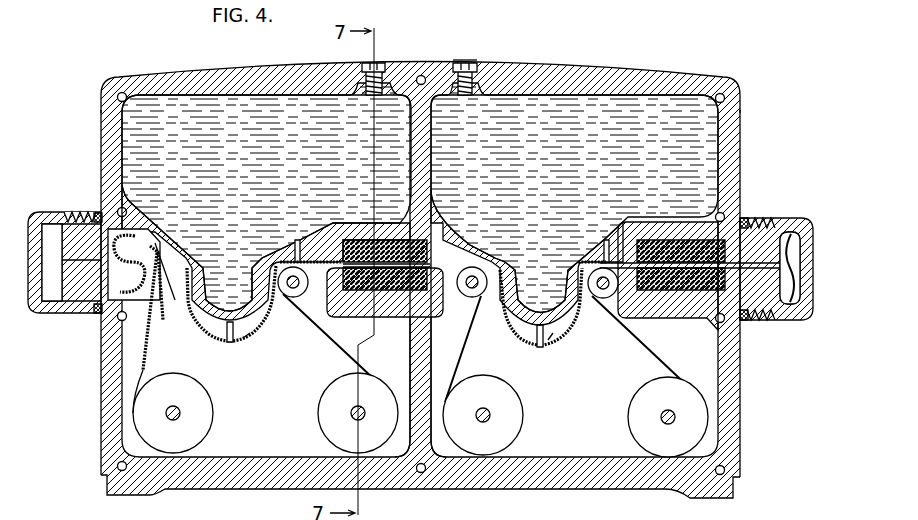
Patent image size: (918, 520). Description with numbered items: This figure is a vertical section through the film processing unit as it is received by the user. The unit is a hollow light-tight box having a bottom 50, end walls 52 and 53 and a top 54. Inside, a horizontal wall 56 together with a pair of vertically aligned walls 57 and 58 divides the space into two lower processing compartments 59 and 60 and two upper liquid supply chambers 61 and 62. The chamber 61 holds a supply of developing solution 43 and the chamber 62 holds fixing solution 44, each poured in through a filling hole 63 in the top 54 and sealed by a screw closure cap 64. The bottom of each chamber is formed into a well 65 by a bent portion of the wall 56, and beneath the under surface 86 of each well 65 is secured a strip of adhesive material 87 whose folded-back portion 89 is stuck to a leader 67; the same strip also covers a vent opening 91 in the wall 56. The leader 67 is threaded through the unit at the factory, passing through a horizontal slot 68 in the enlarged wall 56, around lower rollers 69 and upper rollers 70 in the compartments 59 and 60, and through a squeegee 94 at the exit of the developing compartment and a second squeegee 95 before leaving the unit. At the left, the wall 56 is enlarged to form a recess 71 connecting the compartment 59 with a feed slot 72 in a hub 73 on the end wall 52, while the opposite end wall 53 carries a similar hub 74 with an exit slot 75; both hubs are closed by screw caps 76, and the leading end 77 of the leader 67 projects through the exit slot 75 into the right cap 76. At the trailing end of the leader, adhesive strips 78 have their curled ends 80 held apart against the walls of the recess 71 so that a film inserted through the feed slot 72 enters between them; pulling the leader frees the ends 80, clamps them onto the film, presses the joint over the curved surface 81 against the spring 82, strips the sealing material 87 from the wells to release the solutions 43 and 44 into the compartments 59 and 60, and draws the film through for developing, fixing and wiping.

The developing solution 43 is at (181, 110).
The fixing solution 44 is at (632, 100).
The bottom 50 is at (560, 490).
The end wall 52 is at (106, 397).
The end wall 53 is at (735, 394).
The top 54 is at (558, 76).
The horizontal wall 56 is at (332, 232).
The vertical wall 57 is at (418, 358).
The vertical wall 58 is at (434, 161).
The processing compartment 59 is at (130, 428).
The processing compartment 60 is at (710, 353).
The liquid supply chamber 61 is at (125, 151).
The liquid supply chamber 62 is at (715, 153).
The filling hole 63 is at (366, 80).
The screw closure cap 64 is at (462, 62).
The well 65 is at (262, 322).
The leader 67 is at (637, 341).
The horizontal slot 68 is at (366, 292).
The lower roller 69 is at (420, 415).
The upper roller 70 is at (296, 288).
The recess 71 is at (112, 228).
The feed slot 72 is at (76, 304).
The hub 73 is at (60, 290).
The hub 74 is at (762, 300).
The exit slot 75 is at (766, 258).
The screw cap 76 is at (45, 214).
The leading end 77 is at (788, 232).
The adhesive strip 78 is at (146, 348).
The end 80 is at (97, 308).
The curved surface 81 is at (137, 245).
The spring 82 is at (170, 305).
The under surface 86 is at (216, 338).
The adhesive material strip 87 is at (243, 340).
The folded portion 89 is at (276, 292).
The vent opening 91 is at (296, 240).
The squeegee 94 is at (398, 292).
The squeegee 95 is at (671, 292).